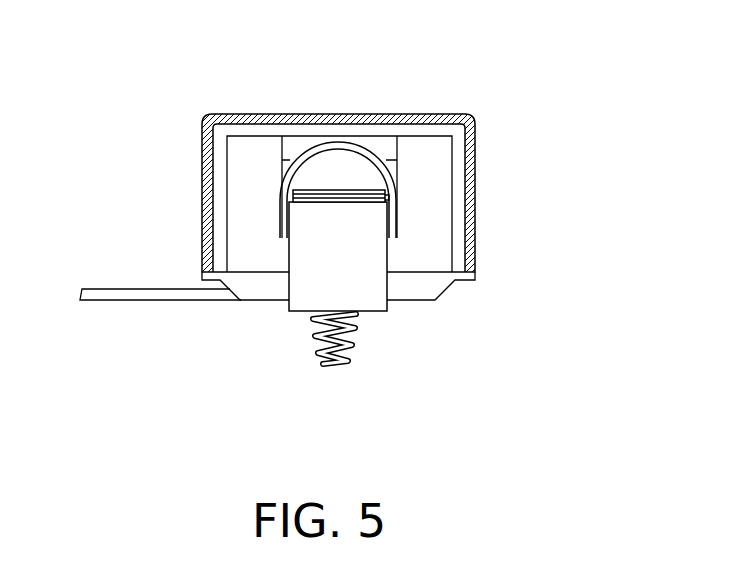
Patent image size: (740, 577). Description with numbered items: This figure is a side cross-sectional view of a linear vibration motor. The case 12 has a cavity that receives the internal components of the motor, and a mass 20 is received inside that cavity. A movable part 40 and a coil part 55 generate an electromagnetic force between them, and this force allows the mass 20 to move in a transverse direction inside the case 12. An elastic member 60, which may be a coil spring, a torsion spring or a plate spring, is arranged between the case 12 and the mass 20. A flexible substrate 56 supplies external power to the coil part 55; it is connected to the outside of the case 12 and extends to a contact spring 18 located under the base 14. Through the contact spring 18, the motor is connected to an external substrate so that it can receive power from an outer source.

The case 12 is at (420, 114).
The base 14 is at (467, 277).
The contact spring 18 is at (328, 366).
The mass 20 is at (246, 228).
The movable part 40 is at (362, 141).
The coil part 55 is at (390, 192).
The flexible substrate 56 is at (367, 282).
The elastic member 60 is at (308, 153).